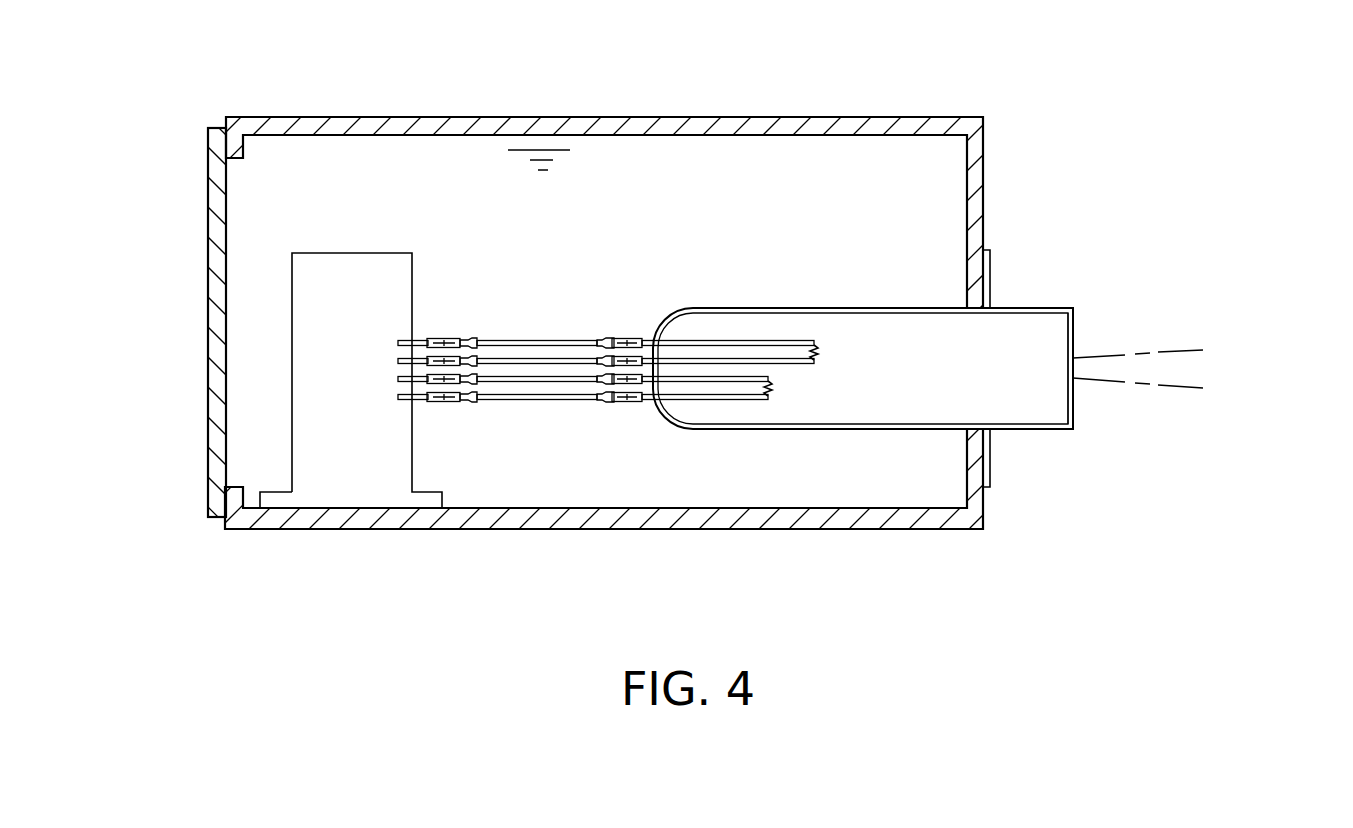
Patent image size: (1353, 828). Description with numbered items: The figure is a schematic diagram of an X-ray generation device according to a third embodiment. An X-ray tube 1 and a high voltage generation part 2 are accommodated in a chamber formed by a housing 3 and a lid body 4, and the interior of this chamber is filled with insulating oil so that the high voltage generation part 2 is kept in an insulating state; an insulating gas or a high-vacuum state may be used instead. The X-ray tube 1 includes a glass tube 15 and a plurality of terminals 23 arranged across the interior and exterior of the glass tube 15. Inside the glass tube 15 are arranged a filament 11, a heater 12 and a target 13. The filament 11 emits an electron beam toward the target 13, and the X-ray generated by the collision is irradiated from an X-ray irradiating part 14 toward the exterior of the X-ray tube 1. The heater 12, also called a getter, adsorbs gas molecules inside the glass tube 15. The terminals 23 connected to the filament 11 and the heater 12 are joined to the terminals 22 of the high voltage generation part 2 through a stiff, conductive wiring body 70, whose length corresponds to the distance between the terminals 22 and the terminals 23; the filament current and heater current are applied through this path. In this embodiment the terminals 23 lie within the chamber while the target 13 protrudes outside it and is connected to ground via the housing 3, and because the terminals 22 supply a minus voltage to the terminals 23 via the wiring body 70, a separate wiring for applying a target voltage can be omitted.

The X-ray tube 1 is at (850, 243).
The high voltage generation part 2 is at (369, 226).
The housing 3 is at (710, 117).
The lid body 4 is at (208, 235).
The filament 11 is at (818, 346).
The heater 12 is at (772, 390).
The target 13 is at (1075, 331).
The X-ray irradiating part 14 is at (1184, 370).
The glass tube 15 is at (845, 308).
The terminals 22 is at (398, 343).
The terminals 23 is at (672, 335).
The wiring body 70 is at (477, 375).